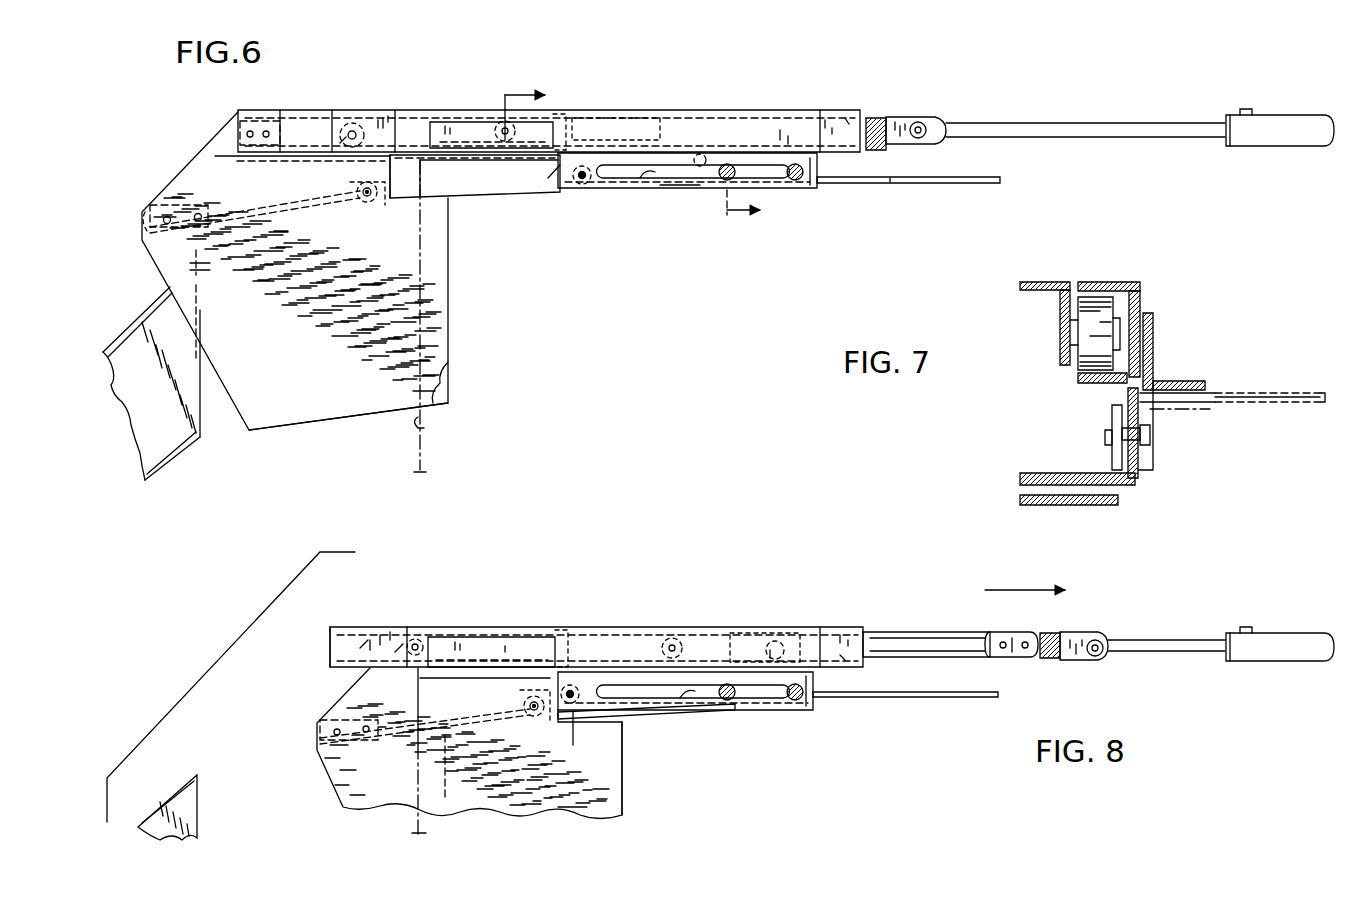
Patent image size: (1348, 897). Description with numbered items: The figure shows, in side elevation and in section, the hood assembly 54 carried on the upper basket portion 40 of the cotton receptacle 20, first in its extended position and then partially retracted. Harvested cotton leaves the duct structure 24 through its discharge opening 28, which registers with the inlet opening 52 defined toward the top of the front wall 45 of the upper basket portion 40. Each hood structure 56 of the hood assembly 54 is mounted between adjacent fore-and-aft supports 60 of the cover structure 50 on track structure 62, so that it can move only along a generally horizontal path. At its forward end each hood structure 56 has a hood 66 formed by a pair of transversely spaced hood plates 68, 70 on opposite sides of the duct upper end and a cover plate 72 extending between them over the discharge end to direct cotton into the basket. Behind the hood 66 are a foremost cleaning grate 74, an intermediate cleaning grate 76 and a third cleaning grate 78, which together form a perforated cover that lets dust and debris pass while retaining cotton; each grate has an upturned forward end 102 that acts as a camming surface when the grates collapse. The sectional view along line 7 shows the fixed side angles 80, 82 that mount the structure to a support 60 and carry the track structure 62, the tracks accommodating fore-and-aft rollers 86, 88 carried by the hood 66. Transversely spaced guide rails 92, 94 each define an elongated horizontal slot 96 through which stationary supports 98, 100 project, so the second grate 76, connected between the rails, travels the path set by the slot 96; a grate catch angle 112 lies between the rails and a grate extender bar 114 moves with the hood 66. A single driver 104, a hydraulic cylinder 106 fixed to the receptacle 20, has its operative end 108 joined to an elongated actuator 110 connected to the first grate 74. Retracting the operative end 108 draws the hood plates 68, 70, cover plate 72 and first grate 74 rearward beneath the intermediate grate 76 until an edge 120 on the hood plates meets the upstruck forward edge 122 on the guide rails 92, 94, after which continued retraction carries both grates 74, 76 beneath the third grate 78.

In FIG. 6, the section line 7— 7 is at (623, 158).
In FIG. 6, the receptacle 20 is at (355, 487).
In FIG. 6, the duct structure 24 is at (178, 470).
In FIG. 8, the duct structure 24 is at (172, 778).
In FIG. 6, the discharge opening 28 is at (202, 422).
In FIG. 6, the upper basket portion 40 is at (412, 437).
In FIG. 8, the upper basket portion 40 is at (410, 816).
In FIG. 6, the front wall 45 is at (420, 470).
In FIG. 8, the front wall 45 is at (414, 834).
In FIG. 7, the cover structure 50 is at (1262, 392).
In FIG. 6, the inlet opening 52 is at (428, 427).
In FIG. 6, the hood assembly 54 is at (405, 92).
In FIG. 8, the hood assembly 54 is at (545, 592).
In FIG. 6, the hood structure 56 is at (762, 100).
In FIG. 8, the hood structure 56 is at (782, 720).
In FIG. 7, the support 60 is at (1312, 404).
In FIG. 6, the track structure 62 is at (373, 105).
In FIG. 7, the track structure 62 is at (1132, 270).
In FIG. 8, the track structure 62 is at (398, 622).
In FIG. 6, the hood 66 is at (455, 333).
In FIG. 8, the hood 66 is at (573, 822).
In FIG. 6, the hood plate 68 is at (322, 425).
In FIG. 8, the hood plate 68 is at (600, 800).
In FIG. 6, the hood plate 70 is at (445, 392).
In FIG. 6, the cover plate 72 is at (232, 228).
In FIG. 8, the cover plate 72 is at (445, 745).
In FIG. 6, the foremost cleaning grate 74 is at (463, 200).
In FIG. 7, the foremost cleaning grate 74 is at (1025, 507).
In FIG. 8, the foremost cleaning grate 74 is at (660, 714).
In FIG. 6, the intermediate cleaning grate 76 is at (665, 190).
In FIG. 7, the intermediate cleaning grate 76 is at (1020, 478).
In FIG. 8, the intermediate cleaning grate 76 is at (702, 714).
In FIG. 6, the third cleaning grate 78 is at (888, 184).
In FIG. 8, the third cleaning grate 78 is at (978, 698).
In FIG. 7, the side angle 80 is at (1152, 357).
In FIG. 6, the side angle / track 82 is at (430, 126).
In FIG. 7, the side angle / track 82 is at (1140, 290).
In FIG. 8, the side angle / track 82 is at (428, 640).
In FIG. 6, the roller 86 is at (348, 148).
In FIG. 8, the roller 86 is at (515, 670).
In FIG. 6, the roller 88 is at (500, 120).
In FIG. 7, the roller 88 is at (1080, 364).
In FIG. 8, the roller 88 is at (672, 635).
In FIG. 6, the guide rail 92 is at (612, 180).
In FIG. 7, the guide rail 92 is at (1140, 478).
In FIG. 8, the guide rail 92 is at (620, 672).
In FIG. 6, the guide rail 94 is at (708, 192).
In FIG. 6, the elongated horizontal slot 96 is at (648, 180).
In FIG. 7, the elongated horizontal slot 96 is at (1150, 422).
In FIG. 8, the elongated horizontal slot 96 is at (690, 688).
In FIG. 6, the stationary support 98 is at (745, 180).
In FIG. 7, the stationary support 98 is at (1160, 440).
In FIG. 8, the stationary support 98 is at (740, 708).
In FIG. 6, the stationary support 100 is at (798, 182).
In FIG. 8, the stationary support 100 is at (812, 702).
In FIG. 6, the upturned forward end 102 is at (360, 205).
In FIG. 8, the upturned forward end 102 is at (530, 720).
In FIG. 6, the driver 104 is at (1148, 118).
In FIG. 8, the driver 104 is at (1265, 620).
In FIG. 6, the hydraulic cylinder 106 is at (1292, 147).
In FIG. 8, the hydraulic cylinder 106 is at (1285, 657).
In FIG. 6, the operative end 108 is at (915, 120).
In FIG. 8, the operative end 108 is at (1078, 640).
In FIG. 6, the actuator 110 is at (876, 116).
In FIG. 8, the actuator 110 is at (961, 645).
In FIG. 6, the grate catch angle 112 is at (556, 170).
In FIG. 6, the grate extender bar 114 is at (585, 115).
In FIG. 8, the grate extender bar 114 is at (745, 625).
In FIG. 6, the edge 120 is at (392, 176).
In FIG. 8, the edge 120 is at (572, 722).
In FIG. 6, the upstruck forward edge 122 is at (550, 140).
In FIG. 8, the upstruck forward edge 122 is at (548, 645).